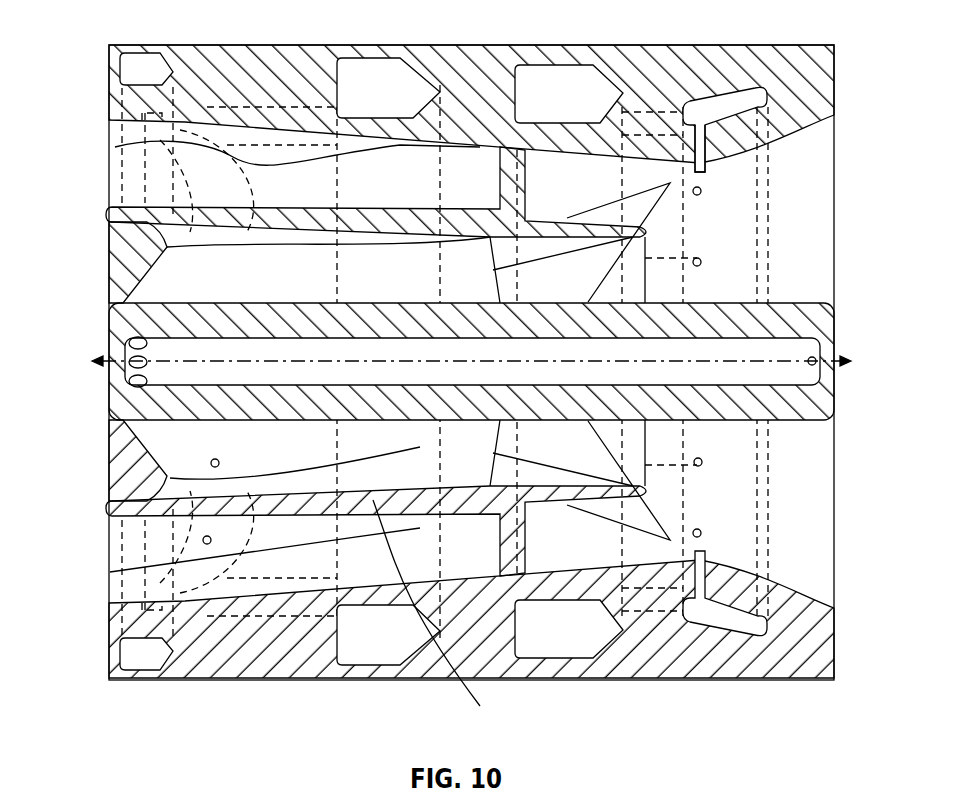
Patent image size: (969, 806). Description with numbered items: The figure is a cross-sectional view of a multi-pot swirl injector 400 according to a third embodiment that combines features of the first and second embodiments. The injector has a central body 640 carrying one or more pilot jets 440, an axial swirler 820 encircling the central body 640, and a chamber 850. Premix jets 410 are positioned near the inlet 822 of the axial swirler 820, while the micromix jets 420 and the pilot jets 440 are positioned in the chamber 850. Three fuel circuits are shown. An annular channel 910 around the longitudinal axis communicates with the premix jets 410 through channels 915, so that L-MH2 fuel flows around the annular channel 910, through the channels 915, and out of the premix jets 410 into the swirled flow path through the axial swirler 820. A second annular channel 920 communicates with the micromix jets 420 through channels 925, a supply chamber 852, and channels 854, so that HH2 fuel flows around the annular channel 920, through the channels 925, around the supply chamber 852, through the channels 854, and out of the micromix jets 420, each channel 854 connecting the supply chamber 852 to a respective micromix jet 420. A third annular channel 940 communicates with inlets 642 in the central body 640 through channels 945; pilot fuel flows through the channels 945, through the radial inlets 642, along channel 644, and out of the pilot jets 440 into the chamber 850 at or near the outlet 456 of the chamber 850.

The multi-pot swirl injector 400 is at (822, 28).
The premix jets 410 is at (220, 461).
The micromix jets 420 is at (701, 192).
The pilot jets 440 is at (815, 364).
The outlet 456 is at (818, 497).
The central body 640 is at (710, 413).
The inlets 642 is at (132, 362).
The channel 644 is at (343, 348).
The axial swirler 820 is at (437, 619).
The inlet 822 is at (120, 468).
The chamber 850 is at (778, 553).
The supply chamber 852 is at (717, 103).
The channels 854 is at (707, 145).
The annular channel 910 is at (373, 648).
The channels 915 is at (277, 118).
The annular channel 920 is at (570, 638).
The channels 925 is at (647, 113).
The annular channel 940 is at (138, 664).
The channels 945 is at (172, 200).